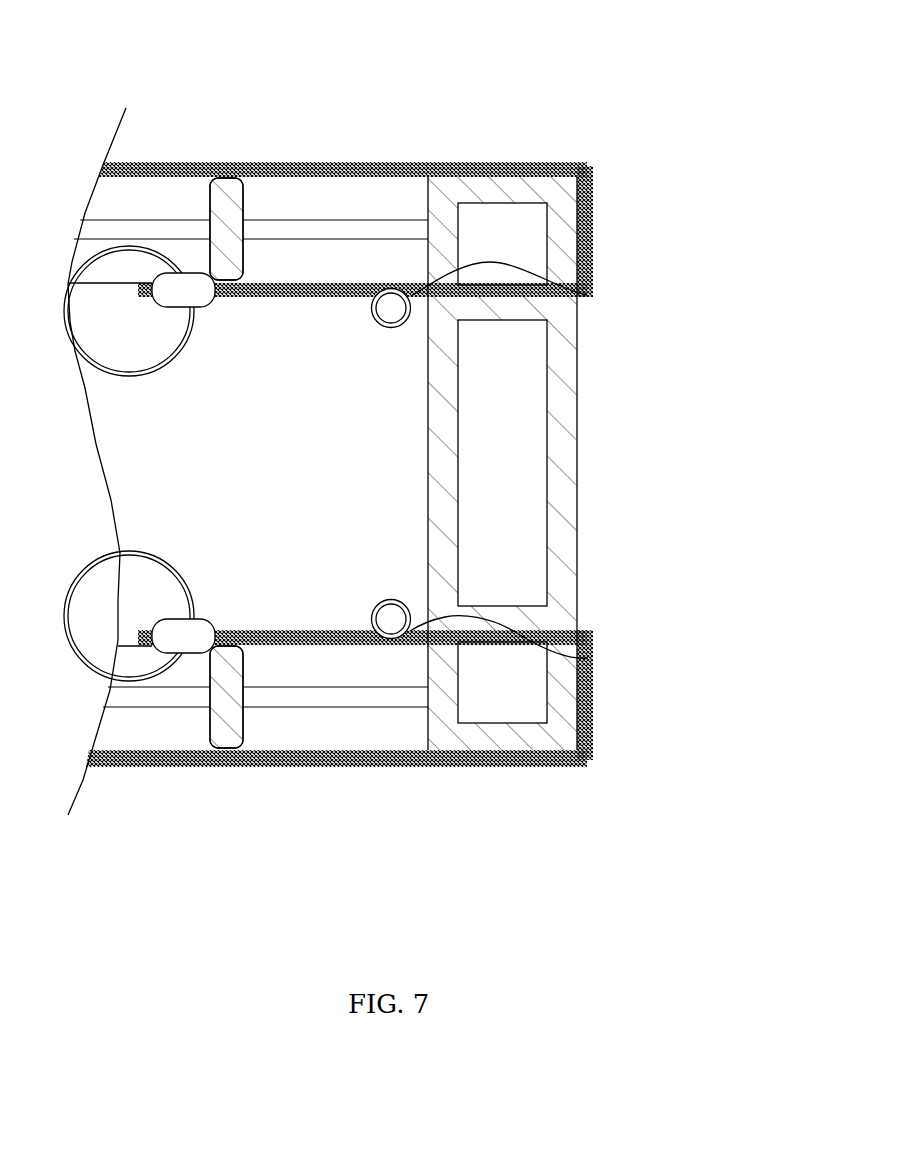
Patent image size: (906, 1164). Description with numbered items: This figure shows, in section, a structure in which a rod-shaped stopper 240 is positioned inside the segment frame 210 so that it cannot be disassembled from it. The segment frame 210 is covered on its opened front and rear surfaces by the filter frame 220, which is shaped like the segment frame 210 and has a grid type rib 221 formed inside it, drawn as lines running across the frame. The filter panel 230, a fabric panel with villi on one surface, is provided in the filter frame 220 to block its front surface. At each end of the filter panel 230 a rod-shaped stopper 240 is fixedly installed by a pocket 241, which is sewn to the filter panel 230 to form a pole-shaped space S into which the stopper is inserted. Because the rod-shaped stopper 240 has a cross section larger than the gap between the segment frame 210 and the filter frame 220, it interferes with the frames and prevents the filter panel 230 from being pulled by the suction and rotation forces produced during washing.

The segment frame 210 is at (560, 453).
The filter frame 220 is at (560, 222).
The grid type rib 221 is at (302, 228).
The filter panel 230 is at (518, 162).
The rod-shaped stopper 240 is at (393, 289).
The pocket 241 is at (405, 323).
The pole-shaped space S is at (587, 295).